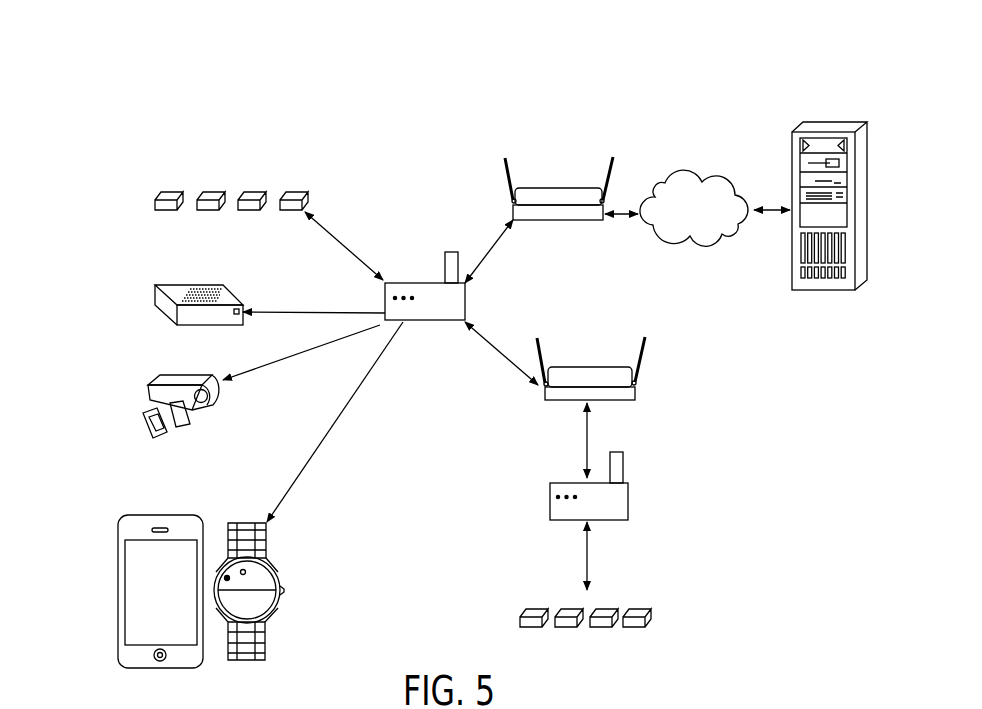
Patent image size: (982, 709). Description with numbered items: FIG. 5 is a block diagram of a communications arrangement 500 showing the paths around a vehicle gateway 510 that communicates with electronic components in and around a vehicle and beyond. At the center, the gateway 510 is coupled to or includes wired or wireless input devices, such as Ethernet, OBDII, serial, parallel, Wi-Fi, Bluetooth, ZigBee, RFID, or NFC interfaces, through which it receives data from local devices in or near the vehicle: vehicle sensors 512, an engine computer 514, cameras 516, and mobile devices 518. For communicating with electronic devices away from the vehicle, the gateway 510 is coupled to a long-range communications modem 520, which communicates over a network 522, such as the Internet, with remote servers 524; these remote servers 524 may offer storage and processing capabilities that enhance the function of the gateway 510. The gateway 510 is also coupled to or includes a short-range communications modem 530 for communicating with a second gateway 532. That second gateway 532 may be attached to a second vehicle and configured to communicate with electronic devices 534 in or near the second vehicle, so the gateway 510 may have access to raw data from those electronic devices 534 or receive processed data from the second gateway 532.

The system 500 is at (112, 94).
The gateway 510 is at (410, 283).
The vehicle sensors 512 is at (217, 190).
The engine computer 514 is at (158, 293).
The cameras 516 is at (147, 387).
The mobile devices 518 is at (120, 532).
The long-range communications modem 520 is at (558, 188).
The network 522 is at (685, 170).
The remote servers 524 is at (823, 122).
The short-range communications modem 530 is at (640, 375).
The second gateway 532 is at (630, 502).
The electronic devices 534 is at (652, 613).